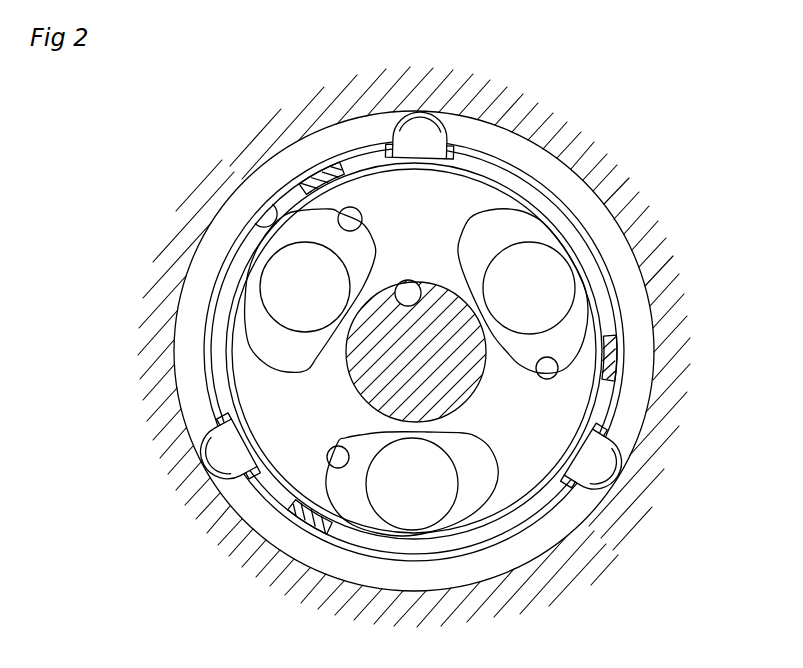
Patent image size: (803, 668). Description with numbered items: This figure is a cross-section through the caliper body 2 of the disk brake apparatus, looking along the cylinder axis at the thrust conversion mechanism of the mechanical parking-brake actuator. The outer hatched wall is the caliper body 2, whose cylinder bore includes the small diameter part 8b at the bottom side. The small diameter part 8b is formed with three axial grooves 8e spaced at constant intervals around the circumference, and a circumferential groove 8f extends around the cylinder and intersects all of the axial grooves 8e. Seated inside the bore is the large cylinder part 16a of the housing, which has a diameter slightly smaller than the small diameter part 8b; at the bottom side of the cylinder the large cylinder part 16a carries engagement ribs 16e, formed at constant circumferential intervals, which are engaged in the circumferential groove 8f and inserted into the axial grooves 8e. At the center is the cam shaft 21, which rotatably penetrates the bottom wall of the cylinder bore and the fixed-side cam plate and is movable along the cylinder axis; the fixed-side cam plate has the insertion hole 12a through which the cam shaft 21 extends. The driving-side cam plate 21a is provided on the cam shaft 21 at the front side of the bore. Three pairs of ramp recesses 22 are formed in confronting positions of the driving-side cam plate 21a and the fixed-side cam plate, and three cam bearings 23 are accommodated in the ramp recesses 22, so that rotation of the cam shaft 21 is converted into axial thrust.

The caliper body 2 is at (668, 214).
The circumferential groove 8f is at (336, 130).
The large cylinder part 16a is at (468, 560).
The small diameter part 8b is at (258, 210).
The driving-side cam plate 21a is at (458, 187).
The axial grooves 8e is at (396, 110).
The engagement ribs 16e is at (428, 126).
The ramp recesses 22 is at (353, 222).
The cam bearings 23 is at (518, 258).
The cam shaft 21 is at (466, 369).
The insertion hole 12a is at (412, 292).